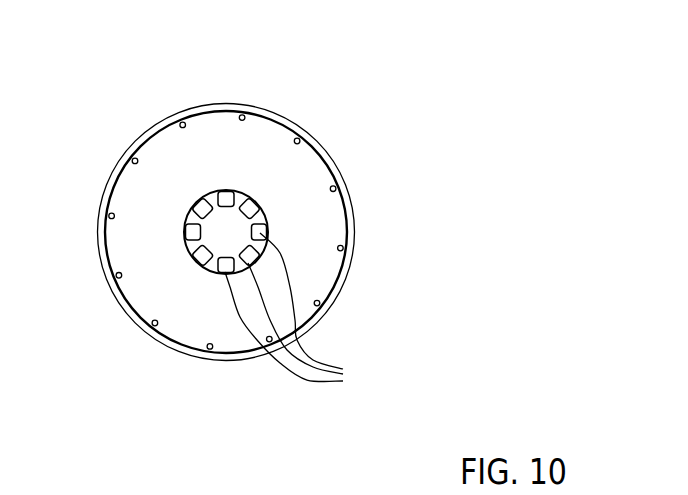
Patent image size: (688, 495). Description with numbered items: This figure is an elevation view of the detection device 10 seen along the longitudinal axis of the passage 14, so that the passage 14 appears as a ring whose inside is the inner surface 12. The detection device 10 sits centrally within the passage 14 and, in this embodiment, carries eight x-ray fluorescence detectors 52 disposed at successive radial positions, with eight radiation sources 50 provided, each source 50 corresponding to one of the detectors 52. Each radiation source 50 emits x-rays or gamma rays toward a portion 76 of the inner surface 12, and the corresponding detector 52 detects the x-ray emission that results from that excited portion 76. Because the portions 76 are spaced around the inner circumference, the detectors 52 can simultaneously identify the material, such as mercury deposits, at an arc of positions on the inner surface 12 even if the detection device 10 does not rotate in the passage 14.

The detection device 10 is at (200, 281).
The inner surface 12 is at (316, 157).
The passage 14 is at (295, 122).
The portions 76 is at (116, 274).
The radiation source 50 is at (304, 307).
The x-ray fluorescence detector 52 is at (326, 320).